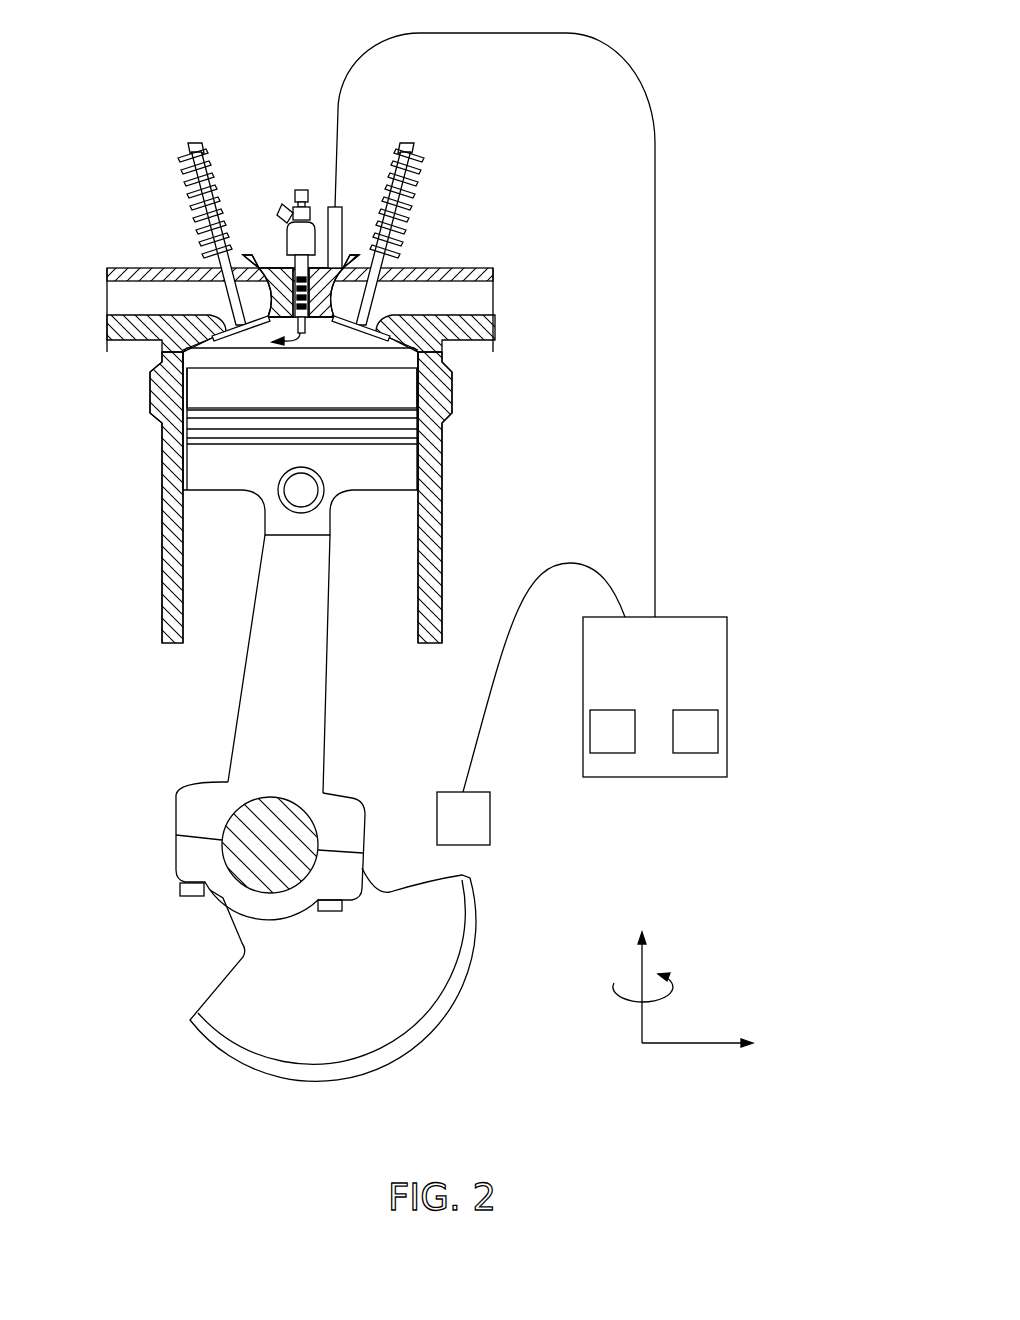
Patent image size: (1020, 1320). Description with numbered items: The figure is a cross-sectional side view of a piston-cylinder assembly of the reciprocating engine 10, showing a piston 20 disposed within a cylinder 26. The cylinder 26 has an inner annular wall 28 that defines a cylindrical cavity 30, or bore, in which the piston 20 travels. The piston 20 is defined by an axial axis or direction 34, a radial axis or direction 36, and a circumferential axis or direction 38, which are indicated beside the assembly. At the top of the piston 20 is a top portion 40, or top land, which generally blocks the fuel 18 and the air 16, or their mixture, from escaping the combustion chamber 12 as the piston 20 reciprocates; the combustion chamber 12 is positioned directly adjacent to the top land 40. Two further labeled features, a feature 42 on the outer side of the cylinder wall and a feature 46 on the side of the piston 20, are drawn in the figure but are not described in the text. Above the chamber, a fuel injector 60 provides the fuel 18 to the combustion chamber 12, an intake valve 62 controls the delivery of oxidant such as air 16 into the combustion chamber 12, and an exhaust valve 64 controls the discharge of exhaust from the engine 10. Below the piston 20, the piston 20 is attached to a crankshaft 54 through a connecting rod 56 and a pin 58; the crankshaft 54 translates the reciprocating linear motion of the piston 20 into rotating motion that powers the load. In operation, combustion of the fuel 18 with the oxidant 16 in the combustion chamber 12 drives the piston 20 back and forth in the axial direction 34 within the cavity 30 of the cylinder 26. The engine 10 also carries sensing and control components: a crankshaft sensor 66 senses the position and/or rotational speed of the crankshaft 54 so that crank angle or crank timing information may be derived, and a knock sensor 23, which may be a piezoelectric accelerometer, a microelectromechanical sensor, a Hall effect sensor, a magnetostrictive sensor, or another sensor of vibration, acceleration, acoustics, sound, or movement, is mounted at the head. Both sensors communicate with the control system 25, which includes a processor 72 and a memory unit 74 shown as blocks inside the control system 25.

The reciprocating engine 10 is at (333, 572).
The combustion chamber 12 is at (362, 342).
The air 16 is at (214, 307).
The fuel 18 is at (292, 175).
The piston 20 is at (344, 474).
The knock sensor 23 is at (342, 207).
The control system 25 is at (563, 405).
The cylinder 26 is at (162, 493).
The inner annular wall 28 is at (198, 563).
The cylindrical cavity 30 is at (221, 625).
The axial axis 34 is at (642, 958).
The radial axis 36 is at (690, 1045).
The circumferential axis 38 is at (673, 988).
The top portion 40 is at (398, 385).
The cylinder block 42 is at (170, 412).
The piston rings 46 is at (418, 437).
The crankshaft 54 is at (222, 1003).
The connecting rod 56 is at (310, 755).
The pin 58 is at (302, 500).
The fuel injector 60 is at (302, 188).
The intake valve 62 is at (193, 140).
The exhaust valve 64 is at (410, 140).
The crankshaft sensor 66 is at (490, 820).
The processor 72 is at (590, 730).
The memory unit 74 is at (718, 730).